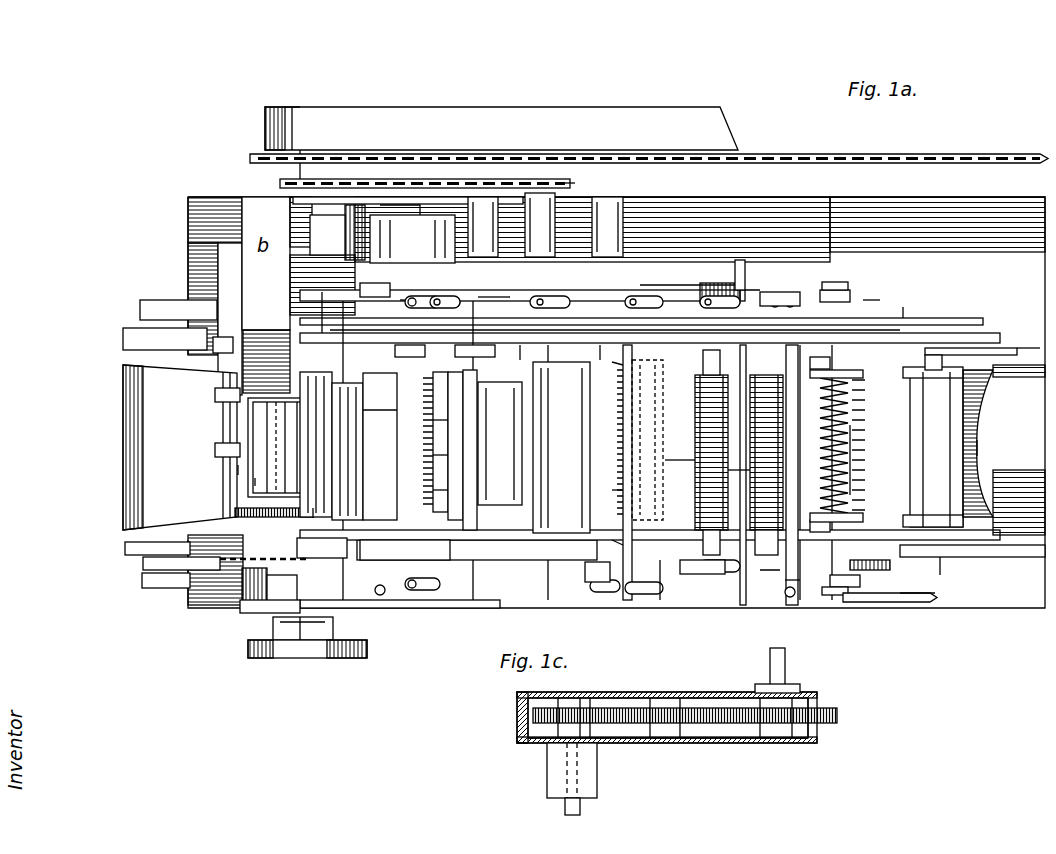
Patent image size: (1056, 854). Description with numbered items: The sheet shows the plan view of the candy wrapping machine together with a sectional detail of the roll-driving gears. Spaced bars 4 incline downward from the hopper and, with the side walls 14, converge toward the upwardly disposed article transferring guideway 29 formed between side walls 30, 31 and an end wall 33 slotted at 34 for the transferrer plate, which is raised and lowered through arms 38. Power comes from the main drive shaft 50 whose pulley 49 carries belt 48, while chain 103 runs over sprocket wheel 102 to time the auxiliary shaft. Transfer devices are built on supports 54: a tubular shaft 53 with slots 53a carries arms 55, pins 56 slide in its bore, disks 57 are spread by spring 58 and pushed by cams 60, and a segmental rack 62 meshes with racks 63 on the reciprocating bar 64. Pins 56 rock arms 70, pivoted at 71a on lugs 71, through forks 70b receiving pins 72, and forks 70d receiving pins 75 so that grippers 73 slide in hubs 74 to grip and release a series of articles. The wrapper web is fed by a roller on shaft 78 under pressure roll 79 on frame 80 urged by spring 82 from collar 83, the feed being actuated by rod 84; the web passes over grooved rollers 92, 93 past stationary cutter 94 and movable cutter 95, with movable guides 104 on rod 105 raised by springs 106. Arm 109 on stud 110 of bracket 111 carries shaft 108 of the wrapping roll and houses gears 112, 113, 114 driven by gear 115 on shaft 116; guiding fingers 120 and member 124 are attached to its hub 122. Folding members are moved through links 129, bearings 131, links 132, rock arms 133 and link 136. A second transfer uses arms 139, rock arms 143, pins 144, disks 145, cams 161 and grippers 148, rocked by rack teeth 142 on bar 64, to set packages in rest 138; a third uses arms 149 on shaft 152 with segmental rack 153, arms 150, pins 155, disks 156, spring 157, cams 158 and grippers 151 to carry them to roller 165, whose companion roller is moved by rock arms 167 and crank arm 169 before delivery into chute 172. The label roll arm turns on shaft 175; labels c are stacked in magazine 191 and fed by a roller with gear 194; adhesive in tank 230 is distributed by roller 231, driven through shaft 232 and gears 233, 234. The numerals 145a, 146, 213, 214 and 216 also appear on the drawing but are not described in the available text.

In FIG. 1A, the bars or rails 4 is at (985, 410).
In FIG. 1A, the side walls 14 is at (953, 572).
In FIG. 1A, the article transferring guideway 29 is at (933, 447).
In FIG. 1A, the side wall 30 is at (980, 448).
In FIG. 1A, the side wall 31 is at (917, 423).
In FIG. 1A, the end wall 33 is at (920, 367).
In FIG. 1A, the vertical slots 34 is at (600, 573).
In FIG. 1A, the arms 38 is at (1017, 351).
In FIG. 1A, the belt 48 is at (501, 128).
In FIG. 1A, the pulley 49 is at (328, 107).
In FIG. 1A, the main drive shaft 50 is at (303, 158).
In FIG. 1A, the tubular shaft 53 is at (870, 573).
In FIG. 1A, the slots 53a is at (855, 490).
In FIG. 1A, the supports 54 is at (780, 292).
In FIG. 1A, the arms 55 is at (828, 290).
In FIG. 1A, the pins or rods 56 is at (840, 286).
In FIG. 1A, the loose collars or disks 57 is at (860, 510).
In FIG. 1A, the spring 58 is at (858, 453).
In FIG. 1A, the cam members 60 is at (863, 375).
In FIG. 1A, the segmental rack 62 is at (863, 307).
In FIG. 1A, the reciprocative racks 63 is at (917, 299).
In FIG. 1A, the bar 64 is at (977, 318).
In FIG. 1A, the arms 70 is at (745, 290).
In FIG. 1A, the fork 70b is at (847, 290).
In FIG. 1A, the fork 70d is at (747, 260).
In FIG. 1A, the lugs 71 is at (794, 570).
In FIG. 1A, the pivot 71a is at (803, 280).
In FIG. 1A, the pins 72 is at (835, 650).
In FIG. 1A, the slidable grippers 73 is at (738, 452).
In FIG. 1A, the hubs 74 is at (736, 422).
In FIG. 1A, the pins 75 is at (760, 290).
In FIG. 1A, the shaft 78 is at (567, 448).
In FIG. 1A, the pressure roll 79 is at (501, 443).
In FIG. 1A, the frame 80 is at (424, 450).
In FIG. 1A, the spring 82 is at (424, 416).
In FIG. 1A, the collar 83 is at (432, 393).
In FIG. 1A, the rod 84 is at (923, 602).
In FIG. 1A, the roller 92 is at (660, 605).
In FIG. 1A, the roller 93 is at (756, 475).
In FIG. 1A, the stationary cutter 94 is at (608, 532).
In FIG. 1A, the movable cutter 95 is at (668, 470).
In FIG. 1A, the sprocket wheel 102 is at (258, 167).
In FIG. 1A, the chain 103 is at (812, 152).
In FIG. 1A, the movable guides 104 is at (749, 476).
In FIG. 1A, the rod 105 is at (781, 537).
In FIG. 1A, the springs 106 is at (803, 475).
In FIG. 1C, the shaft 108 is at (580, 808).
In FIG. 1A, the arm 109 is at (690, 282).
In FIG. 1C, the arm 109 is at (712, 745).
In FIG. 1C, the stud 110 is at (770, 672).
In FIG. 1A, the bracket 111 is at (594, 227).
In FIG. 1C, the gear 112 is at (833, 722).
In FIG. 1C, the gear 113 is at (640, 708).
In FIG. 1C, the gear 114 is at (528, 743).
In FIG. 1A, the gear 115 is at (547, 225).
In FIG. 1A, the shaft 116 is at (583, 183).
In FIG. 1A, the guiding fingers 120 is at (330, 292).
In FIG. 1C, the hub 122 is at (587, 779).
In FIG. 1A, the member 124 is at (495, 279).
In FIG. 1A, the links 129 is at (284, 447).
In FIG. 1A, the bearings 131 is at (477, 343).
In FIG. 1A, the links 132 is at (200, 310).
In FIG. 1A, the rock arms 133 is at (140, 310).
In FIG. 1A, the link 136 is at (379, 278).
In FIG. 1A, the rest 138 is at (561, 447).
In FIG. 1A, the main arms 139 is at (596, 344).
In FIG. 1A, the rack teeth 142 is at (623, 430).
In FIG. 1A, the rock arms 143 is at (600, 296).
In FIG. 1A, the pins or rods 144 is at (652, 590).
In FIG. 1A, the disks 145 is at (610, 493).
In FIG. 1A, the stop 145a is at (613, 356).
In FIG. 1A, the bracket 146 is at (514, 344).
In FIG. 1A, the grippers 148 is at (608, 414).
In FIG. 1A, the arms 149 is at (456, 296).
In FIG. 1A, the arms 150 is at (415, 292).
In FIG. 1A, the grippers 151 is at (382, 446).
In FIG. 1A, the shaft 152 is at (406, 341).
In FIG. 1A, the segmental rack 153 is at (467, 301).
In FIG. 1A, the pins 155 is at (468, 627).
In FIG. 1A, the disks 156 is at (484, 446).
In FIG. 1A, the spring 157 is at (424, 483).
In FIG. 1A, the cams 158 is at (344, 550).
In FIG. 1A, the cams 161 is at (701, 452).
In FIG. 1A, the roller 165 is at (382, 423).
In FIG. 1A, the rock arms 167 is at (300, 353).
In FIG. 1A, the crank arm 169 is at (213, 352).
In FIG. 1A, the delivery chute 172 is at (180, 447).
In FIG. 1A, the shaft 175 is at (490, 200).
In FIG. 1A, the magazine 191 is at (432, 225).
In FIG. 1A, the gear 194 is at (397, 212).
In FIG. 1A, the block 213 is at (273, 628).
In FIG. 1A, the gear 214 is at (310, 640).
In FIG. 1A, the gear end 216 is at (353, 658).
In FIG. 1A, the tank 230 is at (238, 470).
In FIG. 1A, the roller 231 is at (257, 482).
In FIG. 1A, the shaft 232 is at (125, 548).
In FIG. 1A, the gear 233 is at (235, 512).
In FIG. 1A, the gear 234 is at (313, 513).
In FIG. 1A, the labels c is at (327, 235).